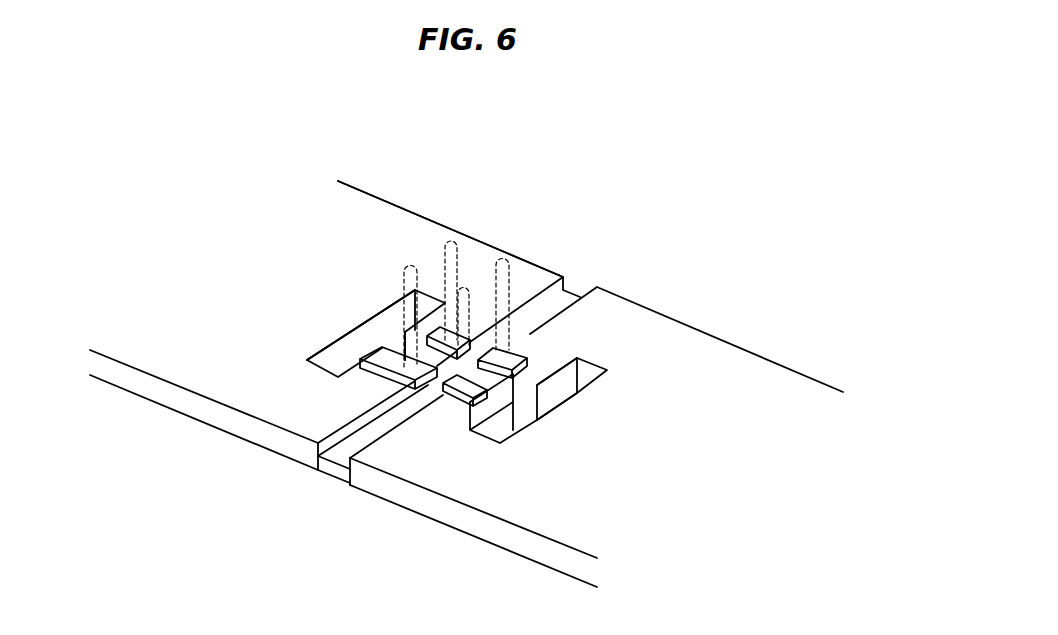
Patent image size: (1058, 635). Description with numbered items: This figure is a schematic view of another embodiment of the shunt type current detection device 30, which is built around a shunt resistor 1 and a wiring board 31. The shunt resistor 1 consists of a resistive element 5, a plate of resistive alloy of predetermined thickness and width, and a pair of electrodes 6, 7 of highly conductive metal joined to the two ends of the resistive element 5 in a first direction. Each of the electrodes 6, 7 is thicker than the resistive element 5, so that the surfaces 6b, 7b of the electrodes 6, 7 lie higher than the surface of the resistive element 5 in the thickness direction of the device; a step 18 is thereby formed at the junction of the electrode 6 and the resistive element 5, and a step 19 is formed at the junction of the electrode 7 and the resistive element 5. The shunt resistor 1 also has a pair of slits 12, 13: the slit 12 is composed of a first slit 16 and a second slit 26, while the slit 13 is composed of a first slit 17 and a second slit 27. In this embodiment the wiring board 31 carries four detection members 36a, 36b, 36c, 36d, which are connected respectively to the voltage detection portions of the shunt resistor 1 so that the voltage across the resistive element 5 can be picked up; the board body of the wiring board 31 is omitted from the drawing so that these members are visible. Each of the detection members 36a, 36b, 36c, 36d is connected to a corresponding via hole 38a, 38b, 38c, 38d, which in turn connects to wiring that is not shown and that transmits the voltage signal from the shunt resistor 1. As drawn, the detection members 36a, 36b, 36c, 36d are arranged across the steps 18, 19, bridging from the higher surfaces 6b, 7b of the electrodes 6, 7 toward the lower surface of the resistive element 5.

The shunt resistor 1 is at (718, 285).
The resistive element 5 is at (340, 477).
The electrode 6 is at (210, 430).
The surface of the electrode 6b is at (197, 343).
The electrode 7 is at (470, 537).
The surface of the electrode 7b is at (585, 490).
The slit 12 is at (373, 305).
The slit 13 is at (594, 380).
The first slit 16 is at (428, 357).
The first slit 17 is at (520, 400).
The step 18 is at (329, 450).
The step 19 is at (347, 468).
The second slit 26 is at (362, 333).
The second slit 27 is at (558, 395).
The current detection device 30 is at (722, 165).
The wiring board 31 is at (585, 215).
The detection member 36a is at (467, 343).
The detection member 36b is at (525, 348).
The detection member 36c is at (380, 363).
The detection member 36d is at (480, 403).
The via hole 38a is at (455, 245).
The via hole 38b is at (507, 267).
The via hole 38c is at (405, 272).
The via hole 38d is at (457, 296).